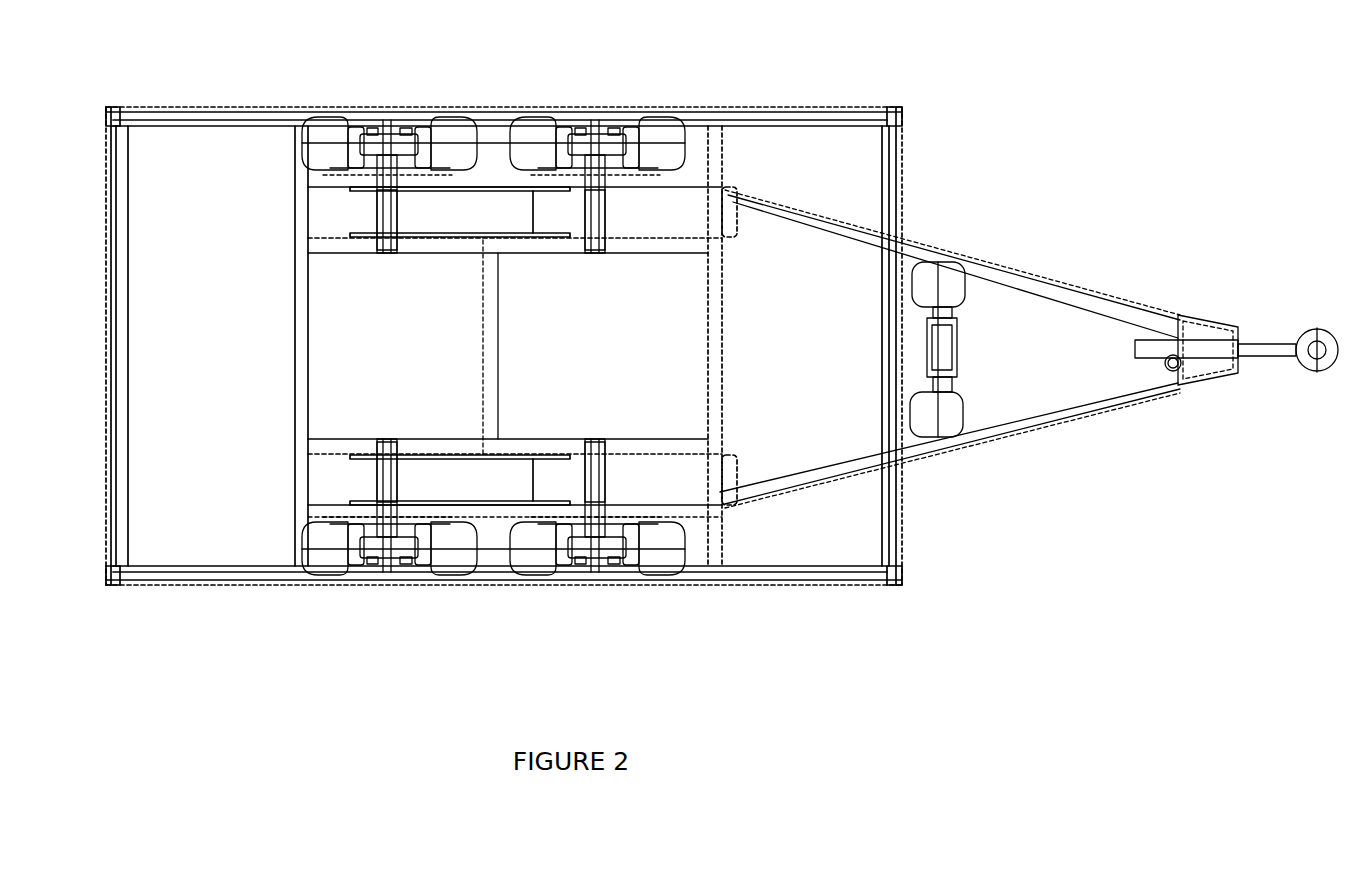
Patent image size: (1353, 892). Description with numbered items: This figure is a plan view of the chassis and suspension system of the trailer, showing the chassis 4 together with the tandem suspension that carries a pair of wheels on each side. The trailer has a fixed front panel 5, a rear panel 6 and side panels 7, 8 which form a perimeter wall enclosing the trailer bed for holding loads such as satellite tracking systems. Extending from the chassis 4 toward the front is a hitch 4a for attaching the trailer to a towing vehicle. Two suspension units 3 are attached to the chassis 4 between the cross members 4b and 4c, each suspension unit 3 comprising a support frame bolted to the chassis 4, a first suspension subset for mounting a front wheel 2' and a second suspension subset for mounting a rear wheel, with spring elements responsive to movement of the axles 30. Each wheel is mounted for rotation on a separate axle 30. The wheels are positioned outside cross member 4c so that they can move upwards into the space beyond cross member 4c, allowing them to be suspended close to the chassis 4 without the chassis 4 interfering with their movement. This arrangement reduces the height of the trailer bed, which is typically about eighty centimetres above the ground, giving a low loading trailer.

The front wheel 2' is at (597, 389).
The suspension unit 3 is at (499, 84).
The chassis 4 is at (845, 522).
The hitch 4a is at (1305, 373).
The cross member 4b is at (662, 445).
The cross member 4c is at (492, 517).
The front panel 5 is at (908, 178).
The rear panel 6 is at (108, 338).
The side panel 7 is at (153, 590).
The side panel 8 is at (845, 107).
The axle 30 is at (392, 223).